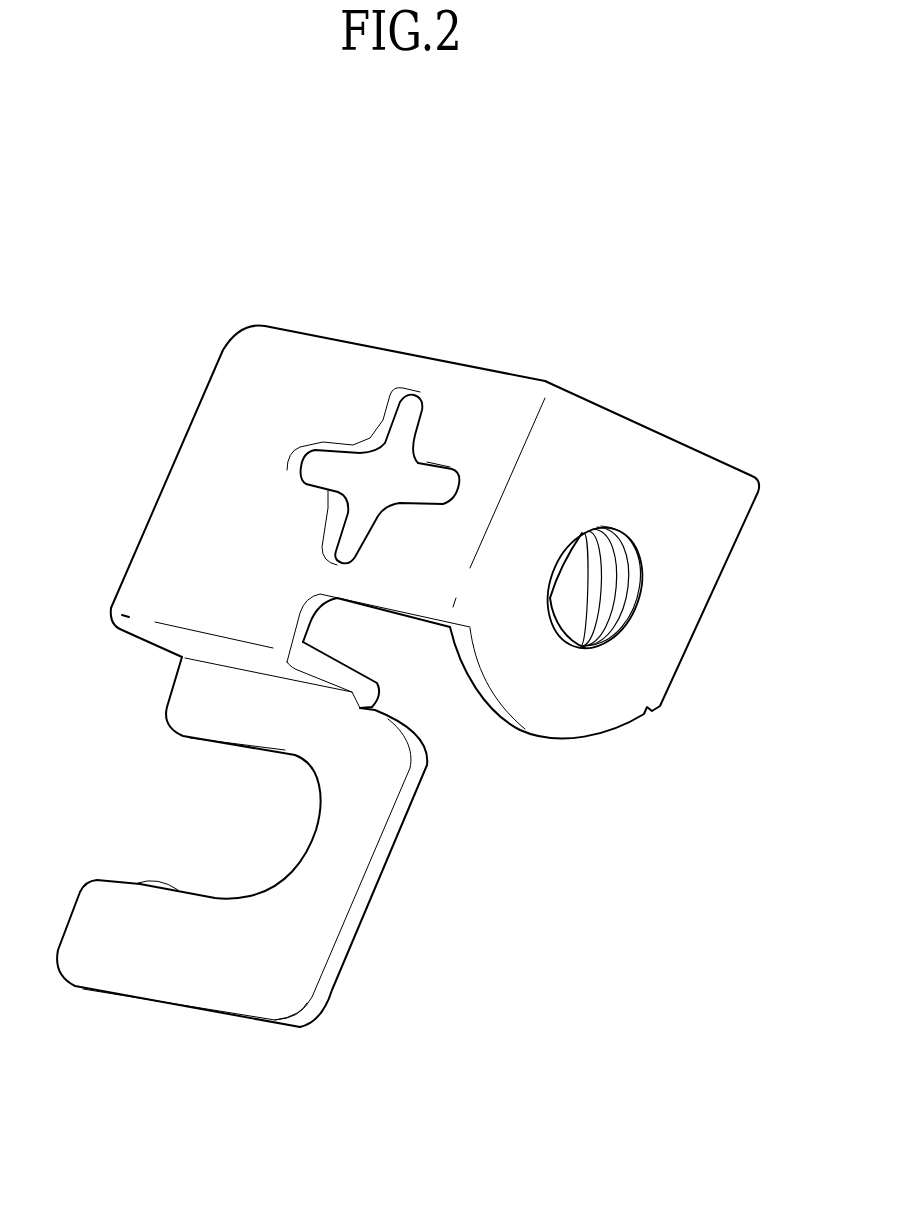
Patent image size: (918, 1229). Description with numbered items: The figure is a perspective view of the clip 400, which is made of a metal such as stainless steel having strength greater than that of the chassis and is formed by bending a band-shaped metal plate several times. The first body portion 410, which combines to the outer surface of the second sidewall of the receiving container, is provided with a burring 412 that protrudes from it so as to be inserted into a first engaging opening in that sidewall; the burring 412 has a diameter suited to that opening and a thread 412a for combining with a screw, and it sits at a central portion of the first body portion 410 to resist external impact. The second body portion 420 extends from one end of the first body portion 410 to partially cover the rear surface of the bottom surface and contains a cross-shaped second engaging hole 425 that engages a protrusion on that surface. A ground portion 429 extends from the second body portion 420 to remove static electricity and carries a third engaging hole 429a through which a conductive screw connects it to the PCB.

The clip 400 is at (638, 361).
The first body portion 410 is at (680, 473).
The burring 412 is at (636, 603).
The thread 412a is at (615, 632).
The second body portion 420 is at (220, 392).
The second engaging hole 425 is at (392, 462).
The ground portion 429 is at (332, 910).
The third engaging hole 429a is at (140, 880).